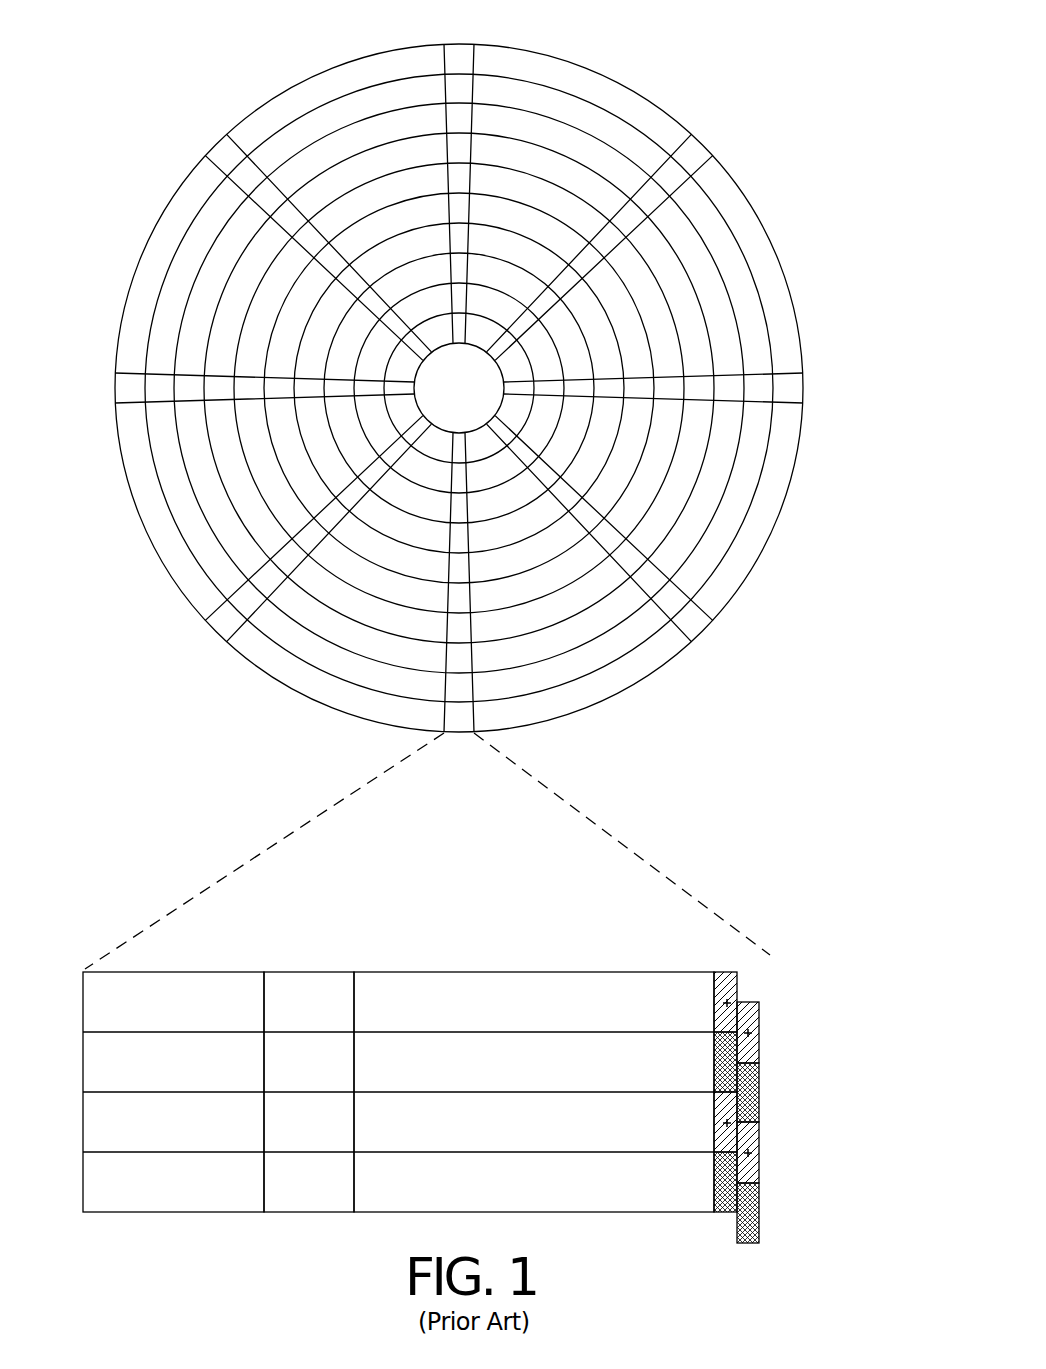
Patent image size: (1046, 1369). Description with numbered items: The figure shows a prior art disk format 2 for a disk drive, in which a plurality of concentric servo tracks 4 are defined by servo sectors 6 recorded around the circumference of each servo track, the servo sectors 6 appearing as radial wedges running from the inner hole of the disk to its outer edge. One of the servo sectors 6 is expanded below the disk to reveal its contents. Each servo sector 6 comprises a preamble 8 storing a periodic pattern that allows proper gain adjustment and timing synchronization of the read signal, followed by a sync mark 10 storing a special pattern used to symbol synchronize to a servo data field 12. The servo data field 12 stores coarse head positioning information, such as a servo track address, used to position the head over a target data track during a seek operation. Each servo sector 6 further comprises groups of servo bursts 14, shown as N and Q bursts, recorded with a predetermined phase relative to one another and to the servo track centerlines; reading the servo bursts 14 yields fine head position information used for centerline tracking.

The disk format 2 is at (207, 47).
The servo tracks 4 is at (600, 93).
The servo sectors 6 is at (461, 484).
The preamble 8 is at (183, 970).
The sync mark 10 is at (311, 970).
The servo data field 12 is at (522, 970).
The servo bursts 14 is at (752, 972).